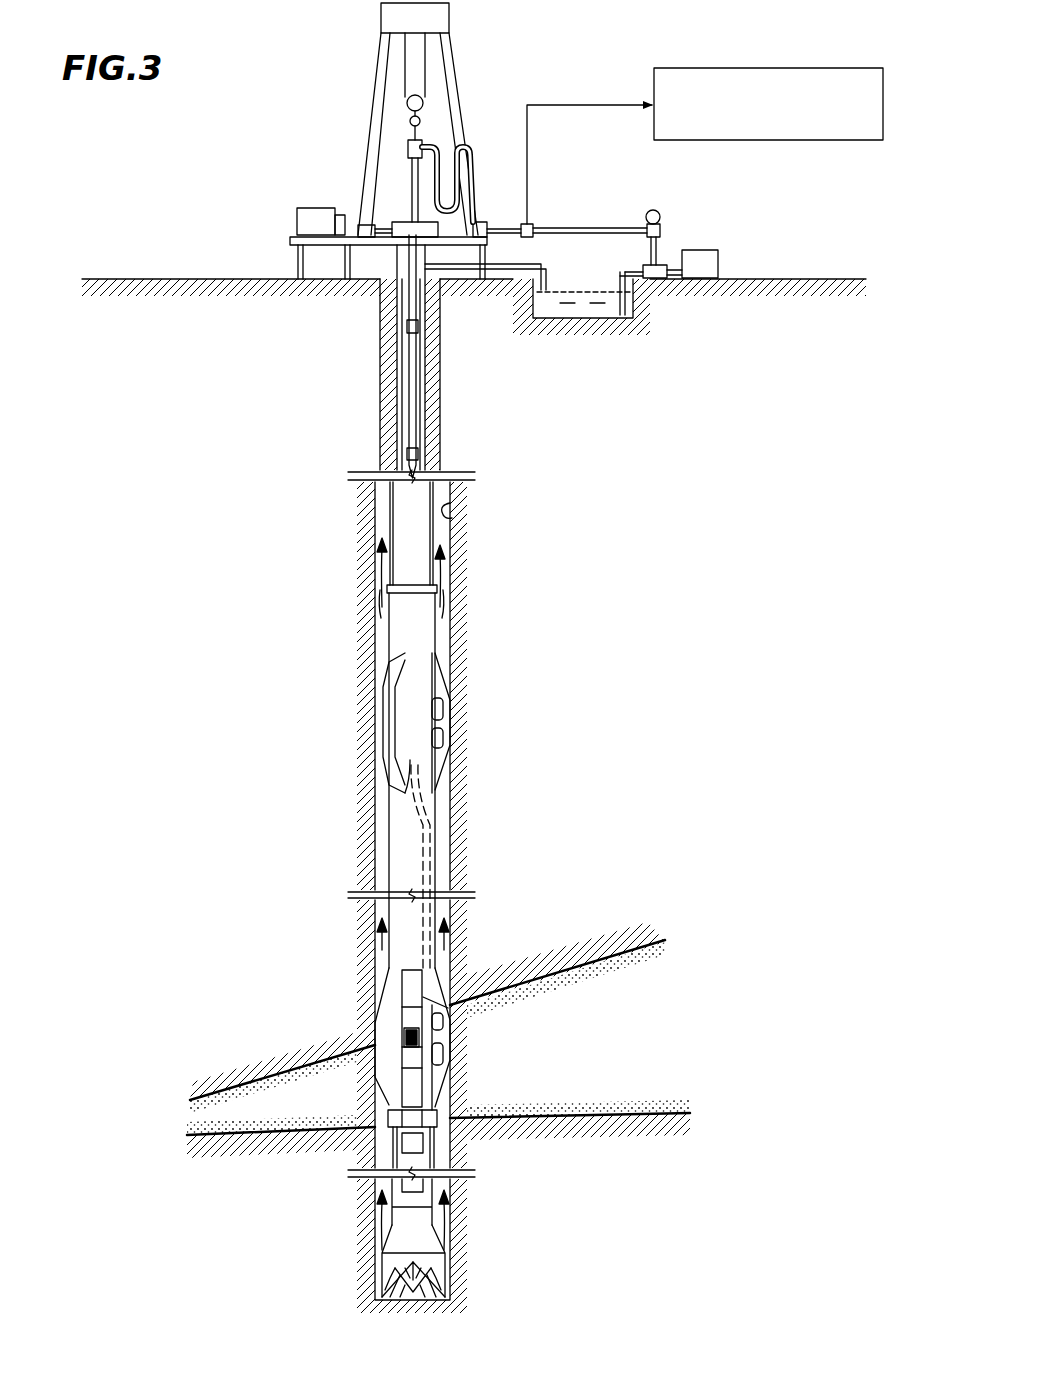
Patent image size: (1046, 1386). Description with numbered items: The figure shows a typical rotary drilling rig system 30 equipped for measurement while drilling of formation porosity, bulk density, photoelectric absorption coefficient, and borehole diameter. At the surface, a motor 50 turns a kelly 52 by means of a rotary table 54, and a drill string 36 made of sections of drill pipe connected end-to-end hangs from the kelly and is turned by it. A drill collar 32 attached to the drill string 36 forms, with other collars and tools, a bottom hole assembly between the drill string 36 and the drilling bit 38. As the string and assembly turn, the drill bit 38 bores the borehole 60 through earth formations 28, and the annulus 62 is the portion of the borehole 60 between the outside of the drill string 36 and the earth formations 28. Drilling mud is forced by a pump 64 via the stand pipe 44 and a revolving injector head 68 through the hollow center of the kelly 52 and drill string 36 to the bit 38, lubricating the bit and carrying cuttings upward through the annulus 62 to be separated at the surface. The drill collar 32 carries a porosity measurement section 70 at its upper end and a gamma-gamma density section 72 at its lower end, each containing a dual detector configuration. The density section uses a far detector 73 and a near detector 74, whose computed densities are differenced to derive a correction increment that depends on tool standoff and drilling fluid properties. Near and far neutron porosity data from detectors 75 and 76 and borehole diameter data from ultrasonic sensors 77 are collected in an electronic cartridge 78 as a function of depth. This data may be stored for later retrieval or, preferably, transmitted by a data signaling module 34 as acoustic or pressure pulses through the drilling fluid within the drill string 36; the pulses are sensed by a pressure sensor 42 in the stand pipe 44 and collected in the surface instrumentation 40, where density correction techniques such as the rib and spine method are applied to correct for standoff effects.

The earth formations 28 is at (638, 1264).
The rotary drilling rig system 30 is at (334, 32).
The drill collar 32 is at (453, 968).
The data signaling module 34 is at (437, 1157).
The drill string 36 is at (408, 362).
The drilling bit 38 is at (440, 1282).
The surface instrumentation 40 is at (797, 68).
The pressure sensor 42 is at (530, 224).
The stand pipe 44 is at (585, 228).
The motor 50 is at (297, 220).
The kelly 52 is at (412, 180).
The rotary table 54 is at (437, 205).
The borehole 60 is at (455, 520).
The annulus 62 is at (422, 441).
The pump 64 is at (718, 263).
The revolving injector head 68 is at (408, 147).
The porosity measurement section 70 is at (475, 780).
The gamma-gamma density section 72 is at (409, 1037).
The far detector 73 is at (445, 1021).
The near detector 74 is at (445, 1053).
The near neutron porosity detector 75 is at (440, 737).
The far neutron porosity detector 76 is at (440, 708).
The ultrasonic sensors 77 is at (408, 1035).
The electronic cartridge 78 is at (372, 1180).